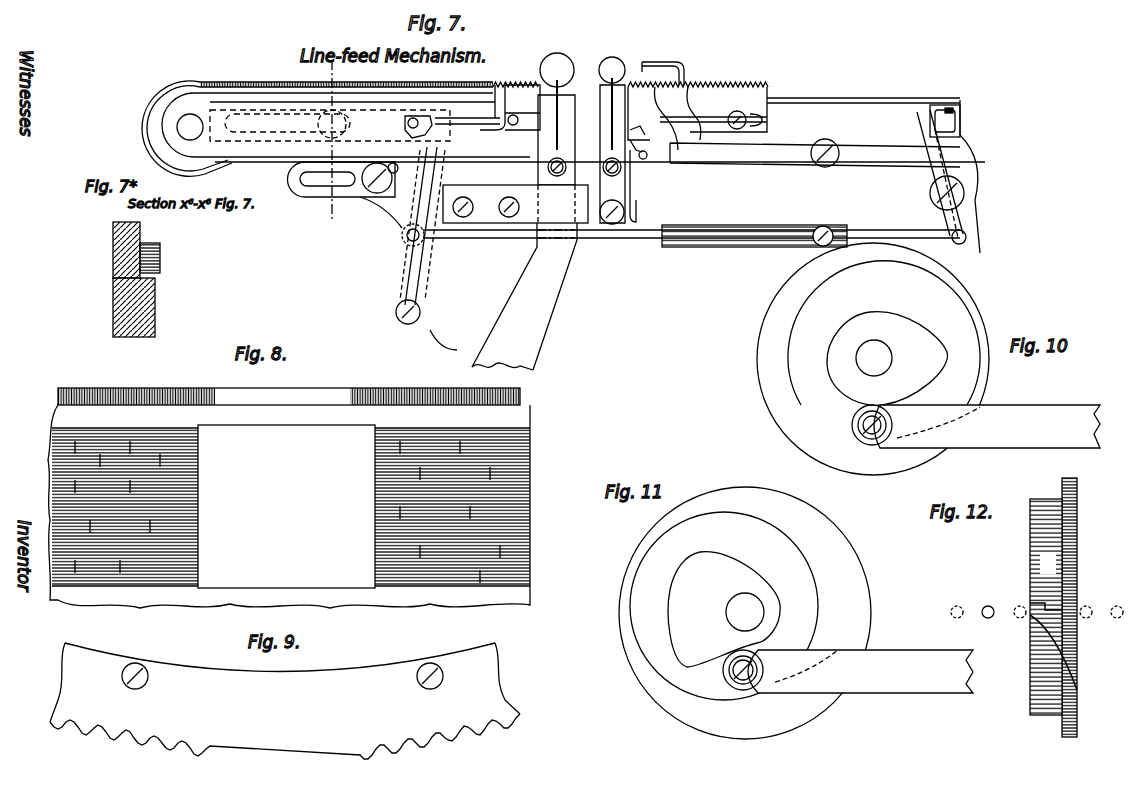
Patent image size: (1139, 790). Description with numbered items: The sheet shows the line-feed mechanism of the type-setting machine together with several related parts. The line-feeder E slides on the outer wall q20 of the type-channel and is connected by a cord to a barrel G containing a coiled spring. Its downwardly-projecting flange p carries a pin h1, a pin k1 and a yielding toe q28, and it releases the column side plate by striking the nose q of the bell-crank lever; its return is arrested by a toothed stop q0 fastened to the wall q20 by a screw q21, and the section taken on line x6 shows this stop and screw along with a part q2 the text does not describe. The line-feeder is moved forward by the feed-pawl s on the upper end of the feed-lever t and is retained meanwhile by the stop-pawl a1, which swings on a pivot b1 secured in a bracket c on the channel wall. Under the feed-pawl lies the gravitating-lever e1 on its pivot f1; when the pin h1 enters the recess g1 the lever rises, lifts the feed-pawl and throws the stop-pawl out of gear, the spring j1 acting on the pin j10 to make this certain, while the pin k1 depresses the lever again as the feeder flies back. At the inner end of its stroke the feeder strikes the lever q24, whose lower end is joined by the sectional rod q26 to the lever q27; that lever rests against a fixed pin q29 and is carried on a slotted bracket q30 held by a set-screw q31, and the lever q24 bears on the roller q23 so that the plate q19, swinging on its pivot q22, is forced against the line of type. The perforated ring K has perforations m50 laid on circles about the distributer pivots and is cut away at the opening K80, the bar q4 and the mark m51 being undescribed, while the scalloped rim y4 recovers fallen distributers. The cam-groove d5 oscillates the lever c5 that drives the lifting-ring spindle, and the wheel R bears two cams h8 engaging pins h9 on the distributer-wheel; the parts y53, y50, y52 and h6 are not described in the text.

In FIG. 7, the barrel G is at (187, 128).
In FIG. 7, the stop q0 is at (573, 115).
The stop q0 is at (133, 243).
In FIG. 7, the outer wall of the type-channel q20 is at (549, 125).
In FIG. 7, the screw q21 is at (332, 124).
The screw q21 is at (160, 258).
The frame block q2 is at (124, 307).
In FIG. 7, the section line x6 is at (334, 132).
In FIG. 7, the toe q28 is at (421, 126).
In FIG. 7, the nose q is at (462, 122).
In FIG. 7, the flange p is at (516, 106).
In FIG. 7, the pin h1 is at (520, 121).
In FIG. 7, the feed-pawl s is at (564, 138).
In FIG. 7, the pivot b1 is at (612, 131).
In FIG. 7, the bracket c is at (612, 171).
In FIG. 7, the stop-pawl a1 is at (642, 62).
In FIG. 7, the line-feeder E is at (698, 111).
In FIG. 7, the pin k1 is at (745, 112).
In FIG. 7, the gravitating-lever e1 is at (798, 127).
In FIG. 7, the recess g1 is at (637, 126).
In FIG. 7, the spring j1 is at (638, 140).
In FIG. 7, the pin j10 is at (646, 185).
In FIG. 7, the pivot f1 is at (825, 145).
In FIG. 7, the roller q23 is at (955, 105).
In FIG. 7, the movable plate q19 is at (950, 112).
In FIG. 7, the lever q24 is at (935, 184).
In FIG. 7, the pivot q22 is at (935, 177).
In FIG. 7, the rod q26 is at (691, 230).
In FIG. 7, the lever t is at (515, 277).
In FIG. 7, the slotted bracket q30 is at (345, 195).
In FIG. 7, the set-screw q31 is at (377, 177).
In FIG. 7, the fixed pin q29 is at (392, 163).
In FIG. 7, the lever q27 is at (426, 248).
In FIG. 8, the rack bar q4 is at (289, 388).
In FIG. 8, the ring K is at (283, 506).
In FIG. 8, the opening K80 is at (286, 506).
In FIG. 8, the perforations m50 is at (287, 507).
In FIG. 8, the brick m51 is at (499, 575).
In FIG. 9, the scalloped rim y4 is at (285, 701).
In FIG. 10, the cam-groove d5 is at (873, 359).
In FIG. 10, the lever c5 is at (976, 426).
In FIG. 11, the cam y53 is at (745, 613).
In FIG. 11, the arm y50 is at (860, 671).
In FIG. 11, the roller y52 is at (754, 670).
In FIG. 12, the cams h8 is at (1077, 607).
In FIG. 12, the wheel R is at (1053, 607).
In FIG. 12, the notch h6 is at (1038, 596).
In FIG. 12, the pins h9 is at (1041, 604).